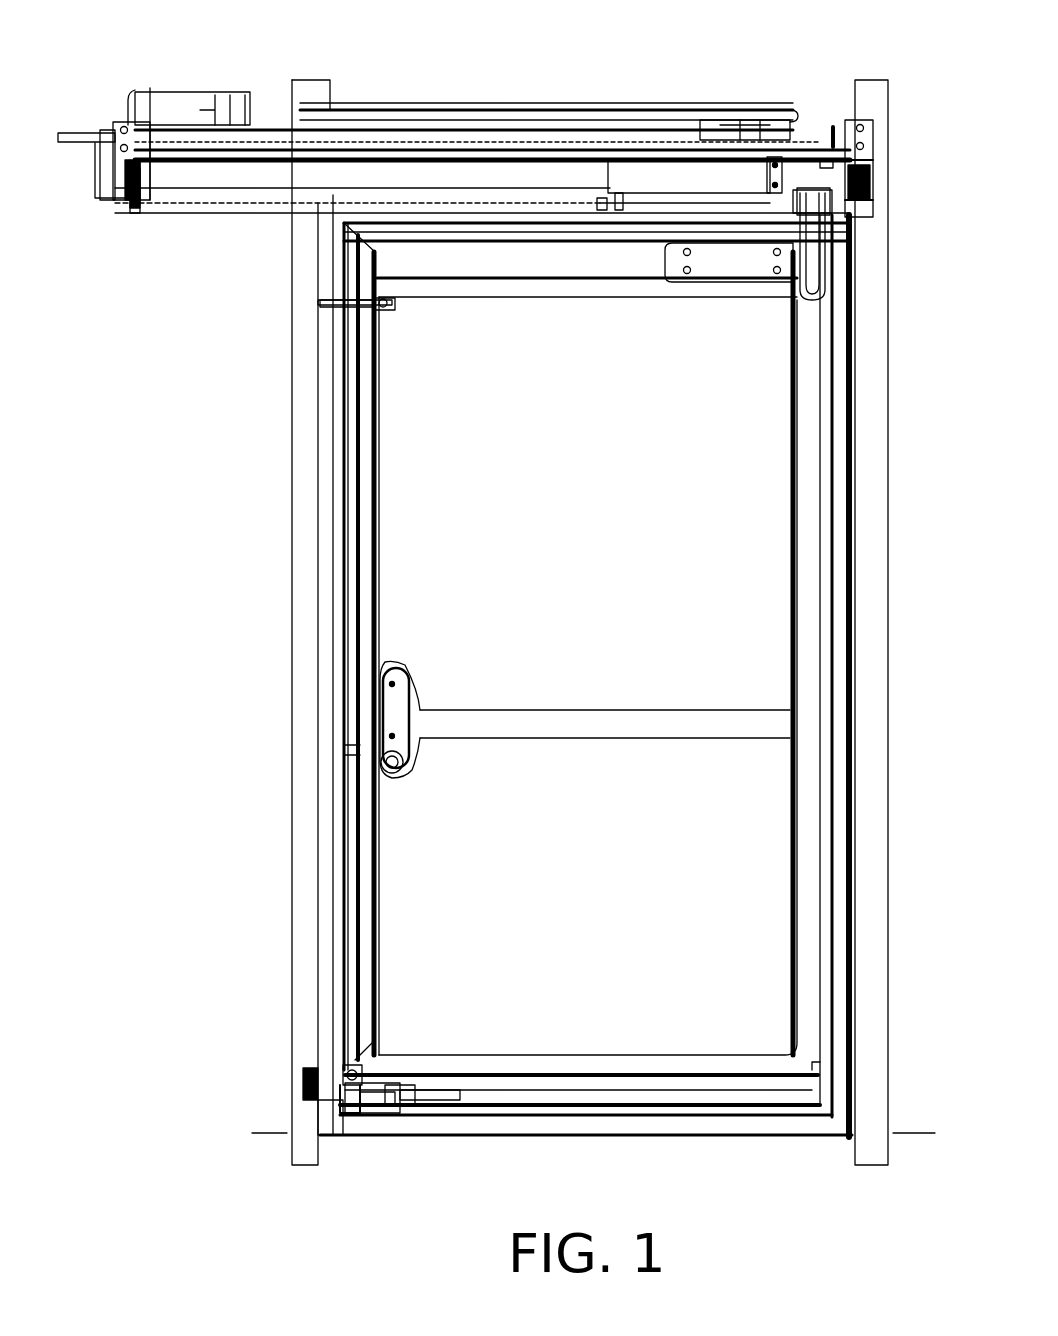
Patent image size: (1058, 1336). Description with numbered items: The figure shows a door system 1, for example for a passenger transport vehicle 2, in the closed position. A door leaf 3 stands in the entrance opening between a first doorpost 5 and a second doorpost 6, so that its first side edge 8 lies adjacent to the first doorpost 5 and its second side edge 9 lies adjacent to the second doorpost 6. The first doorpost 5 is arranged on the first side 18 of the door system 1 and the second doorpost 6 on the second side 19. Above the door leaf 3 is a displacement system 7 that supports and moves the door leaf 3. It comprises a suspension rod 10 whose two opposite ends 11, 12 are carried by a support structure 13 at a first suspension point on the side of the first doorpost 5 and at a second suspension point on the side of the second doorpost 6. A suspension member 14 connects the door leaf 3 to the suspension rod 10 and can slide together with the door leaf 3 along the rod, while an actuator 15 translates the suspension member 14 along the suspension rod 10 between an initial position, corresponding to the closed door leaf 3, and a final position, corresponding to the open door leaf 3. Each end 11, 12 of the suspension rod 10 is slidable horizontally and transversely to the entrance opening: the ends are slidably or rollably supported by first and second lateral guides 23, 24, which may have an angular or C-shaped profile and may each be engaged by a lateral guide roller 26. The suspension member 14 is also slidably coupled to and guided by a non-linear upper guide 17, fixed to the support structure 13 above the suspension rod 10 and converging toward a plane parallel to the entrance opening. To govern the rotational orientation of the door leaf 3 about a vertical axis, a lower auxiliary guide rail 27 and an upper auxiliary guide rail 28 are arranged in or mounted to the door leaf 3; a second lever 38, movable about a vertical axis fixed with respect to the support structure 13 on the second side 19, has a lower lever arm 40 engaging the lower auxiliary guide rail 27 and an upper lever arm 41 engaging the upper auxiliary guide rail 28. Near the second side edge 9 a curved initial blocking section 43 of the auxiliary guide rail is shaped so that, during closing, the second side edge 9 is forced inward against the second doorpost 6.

The door system 1 is at (250, 512).
The passenger transport vehicle 2 is at (272, 1138).
The door leaf 3 is at (410, 578).
The first doorpost 5 is at (870, 948).
The second doorpost 6 is at (300, 880).
The displacement system 7 is at (556, 80).
The first side edge 8 is at (850, 698).
The second side edge 9 is at (320, 1120).
The suspension rod 10 is at (285, 175).
The first end of suspension rod 11 is at (820, 160).
The second end of suspension rod 12 is at (140, 172).
The support structure 13 is at (95, 160).
The suspension member 14 is at (648, 178).
The actuator 15 is at (515, 135).
The upper guide 17 is at (418, 110).
The first side 18 is at (957, 543).
The second side 19 is at (197, 498).
The first lateral guide 23 is at (878, 180).
The second lateral guide 24 is at (115, 192).
The lateral guide roller 26 is at (868, 165).
The lower auxiliary guide rail 27 is at (455, 1085).
The upper auxiliary guide rail 28 is at (503, 282).
The second lever 38 is at (398, 308).
The lower lever arm 40 is at (358, 1115).
The upper lever arm 41 is at (388, 305).
The curved initial blocking section 43 is at (413, 1090).